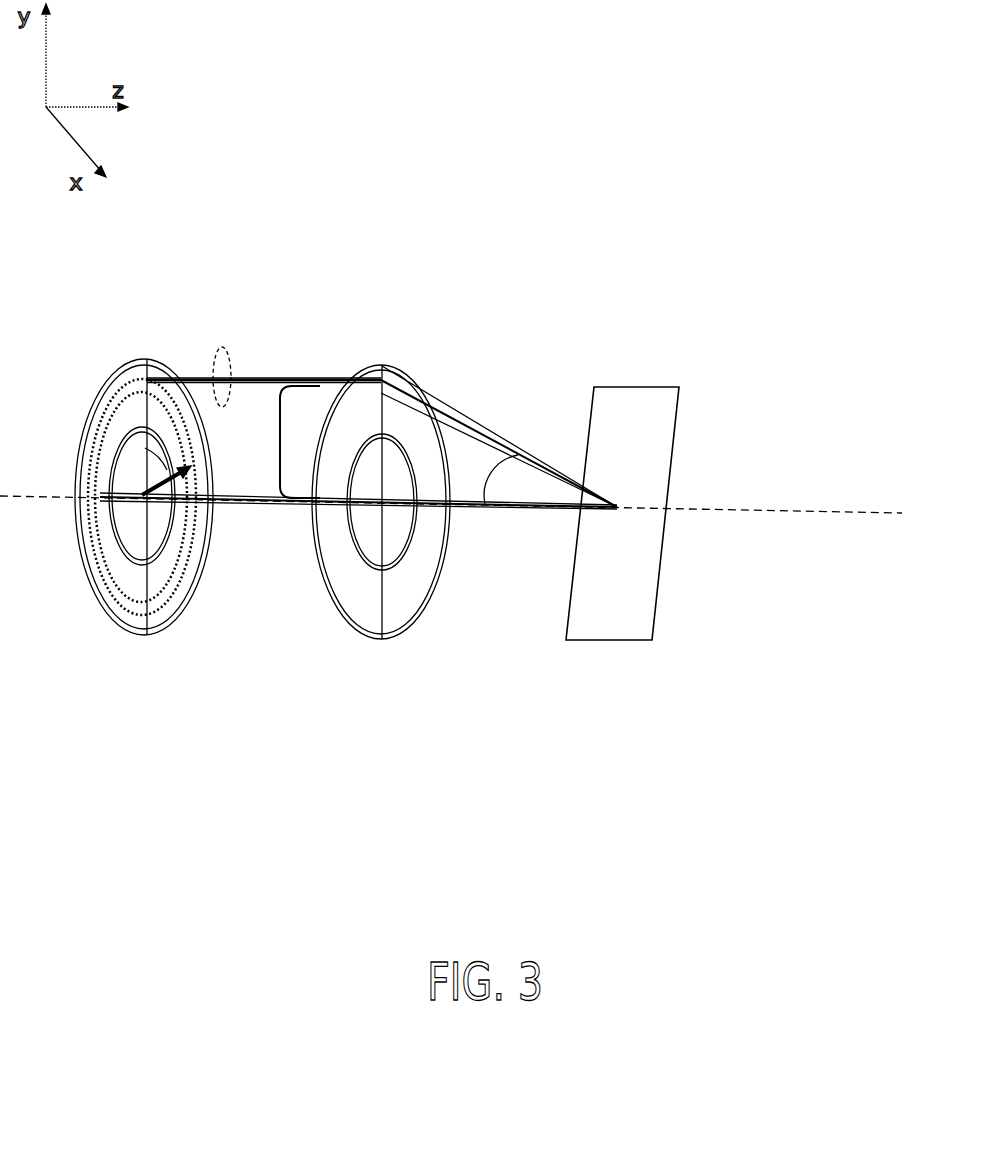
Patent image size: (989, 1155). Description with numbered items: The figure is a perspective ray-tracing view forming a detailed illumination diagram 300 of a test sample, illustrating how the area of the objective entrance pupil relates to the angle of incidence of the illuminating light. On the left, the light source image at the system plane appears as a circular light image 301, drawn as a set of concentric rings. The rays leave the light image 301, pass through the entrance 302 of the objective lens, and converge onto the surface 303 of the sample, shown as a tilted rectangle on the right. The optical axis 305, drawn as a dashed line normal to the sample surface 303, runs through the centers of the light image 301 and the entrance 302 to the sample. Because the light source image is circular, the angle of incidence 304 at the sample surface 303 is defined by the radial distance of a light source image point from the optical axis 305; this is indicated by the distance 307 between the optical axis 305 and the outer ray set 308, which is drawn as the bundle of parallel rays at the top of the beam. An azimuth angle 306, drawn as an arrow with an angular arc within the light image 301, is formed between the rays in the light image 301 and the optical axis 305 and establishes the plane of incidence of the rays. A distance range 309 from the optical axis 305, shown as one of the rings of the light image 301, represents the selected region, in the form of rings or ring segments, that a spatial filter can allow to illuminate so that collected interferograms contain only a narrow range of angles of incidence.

The illumination diagram 300 is at (561, 109).
The light image 301 is at (144, 476).
The entrance 302 is at (381, 478).
The surface 303 is at (641, 491).
The angle of incidence 304 is at (495, 467).
The optical axis 305 is at (738, 511).
The azimuth angle 306 is at (163, 465).
The distance 307 is at (280, 440).
The outer ray set 308 is at (222, 347).
The distance range 309 is at (172, 587).